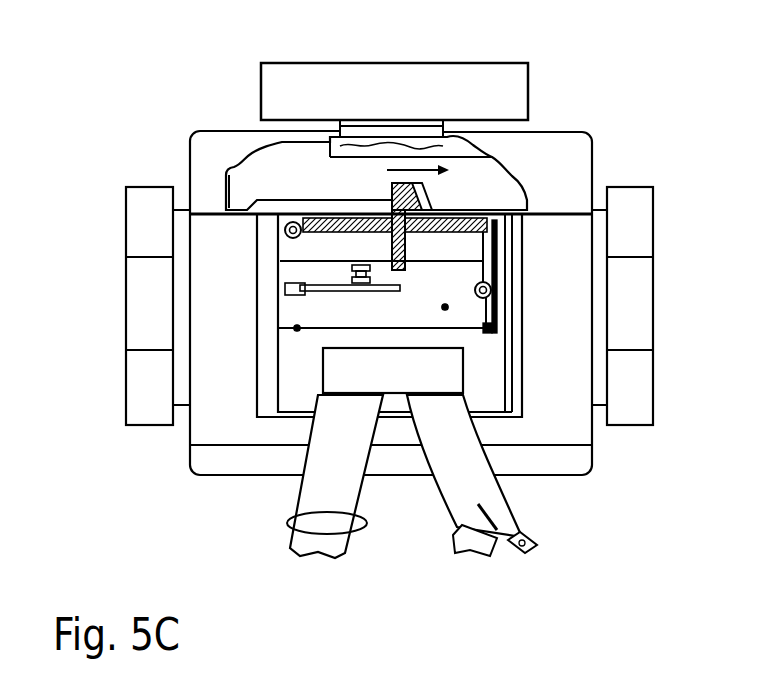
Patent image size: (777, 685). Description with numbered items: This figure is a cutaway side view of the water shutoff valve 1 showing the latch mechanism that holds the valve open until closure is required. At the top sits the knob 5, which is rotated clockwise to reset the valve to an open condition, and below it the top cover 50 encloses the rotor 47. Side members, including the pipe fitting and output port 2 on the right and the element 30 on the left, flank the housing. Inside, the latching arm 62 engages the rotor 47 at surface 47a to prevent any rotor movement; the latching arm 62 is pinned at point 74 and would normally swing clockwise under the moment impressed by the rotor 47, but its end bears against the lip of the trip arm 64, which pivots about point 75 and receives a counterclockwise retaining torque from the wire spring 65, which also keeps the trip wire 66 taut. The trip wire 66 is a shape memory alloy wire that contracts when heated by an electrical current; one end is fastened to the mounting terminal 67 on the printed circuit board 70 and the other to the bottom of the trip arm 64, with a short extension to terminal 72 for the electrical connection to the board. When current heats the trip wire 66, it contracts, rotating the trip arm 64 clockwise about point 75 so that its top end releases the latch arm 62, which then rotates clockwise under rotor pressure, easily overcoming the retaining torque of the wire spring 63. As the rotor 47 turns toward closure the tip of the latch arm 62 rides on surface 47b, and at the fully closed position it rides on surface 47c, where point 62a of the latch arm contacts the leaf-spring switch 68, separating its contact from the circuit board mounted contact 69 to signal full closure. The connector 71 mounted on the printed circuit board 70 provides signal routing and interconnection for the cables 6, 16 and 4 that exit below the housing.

The water shutoff valve 1 is at (164, 98).
The pipe fitting and output port 2 is at (655, 323).
The cable 4 is at (527, 534).
The knob 5 is at (452, 82).
The cable 6 is at (363, 527).
The cable 16 is at (458, 548).
The left side member 30 is at (125, 252).
The rotor 47 is at (510, 200).
The surface 47a is at (390, 194).
The surface 47b is at (333, 198).
The surface 47c is at (240, 203).
The top cover 50 is at (203, 170).
The latching arm 62 is at (433, 203).
The point 62a is at (403, 272).
The wire spring 63 is at (277, 255).
The trip arm 64 is at (490, 243).
The wire spring 65 is at (508, 323).
The trip wire 66 is at (445, 307).
The mounting terminal 67 is at (297, 330).
The leaf-spring switch 68 is at (362, 293).
The circuit board mounted contact 69 is at (362, 266).
The printed circuit board 70 is at (297, 388).
The connector 71 is at (342, 380).
The terminal 72 is at (455, 301).
The point 74 is at (282, 222).
The point 75 is at (495, 280).